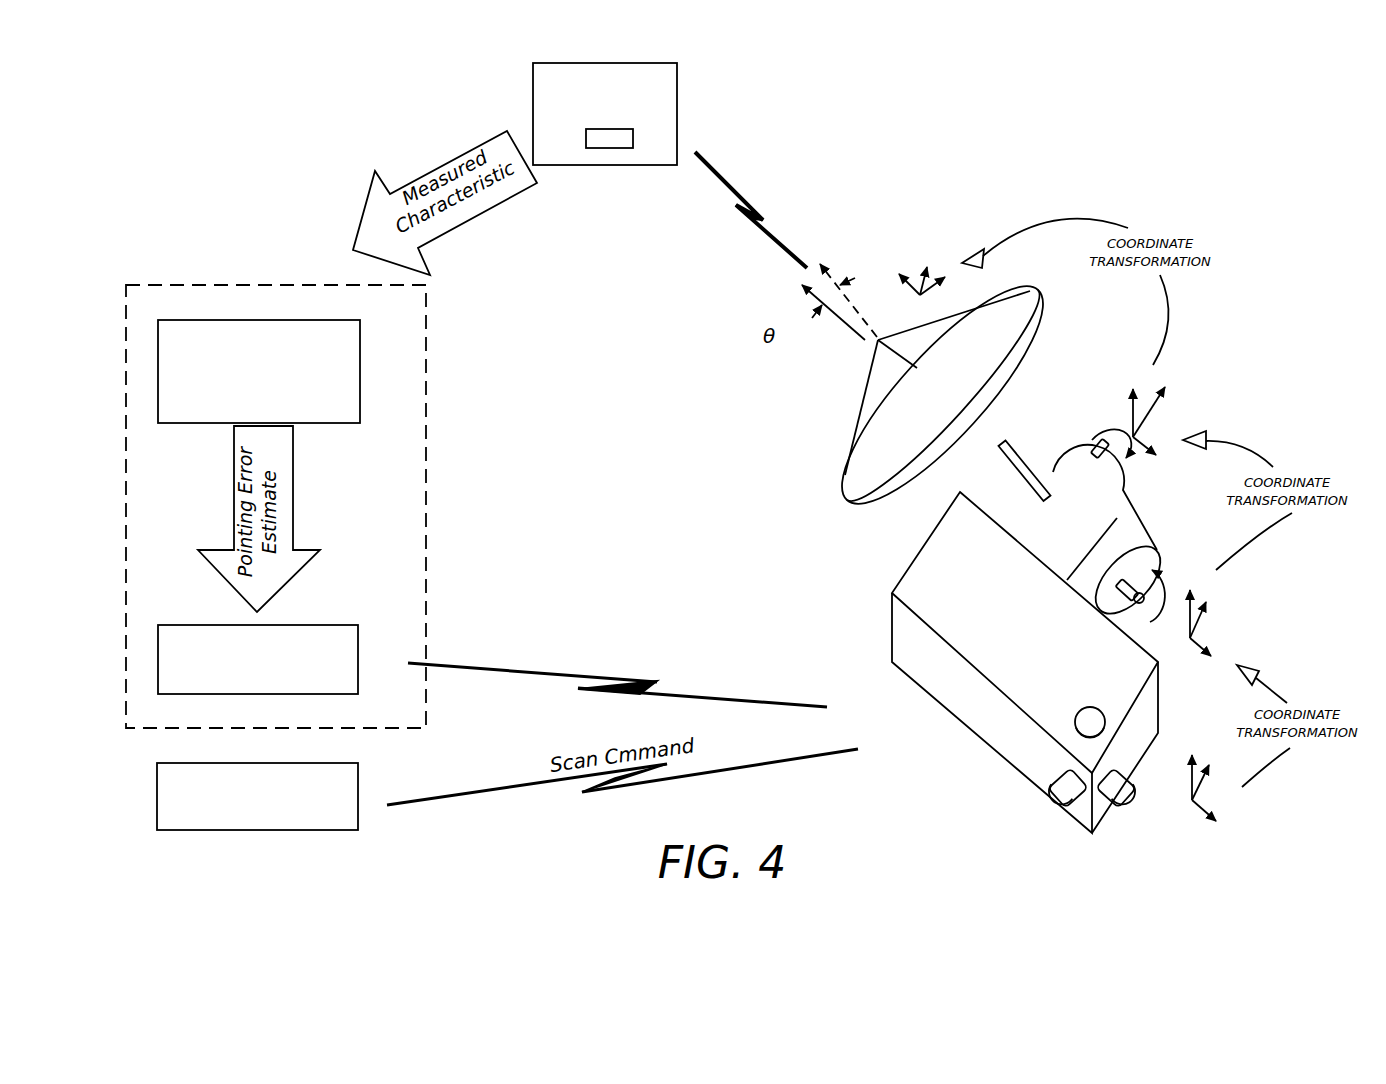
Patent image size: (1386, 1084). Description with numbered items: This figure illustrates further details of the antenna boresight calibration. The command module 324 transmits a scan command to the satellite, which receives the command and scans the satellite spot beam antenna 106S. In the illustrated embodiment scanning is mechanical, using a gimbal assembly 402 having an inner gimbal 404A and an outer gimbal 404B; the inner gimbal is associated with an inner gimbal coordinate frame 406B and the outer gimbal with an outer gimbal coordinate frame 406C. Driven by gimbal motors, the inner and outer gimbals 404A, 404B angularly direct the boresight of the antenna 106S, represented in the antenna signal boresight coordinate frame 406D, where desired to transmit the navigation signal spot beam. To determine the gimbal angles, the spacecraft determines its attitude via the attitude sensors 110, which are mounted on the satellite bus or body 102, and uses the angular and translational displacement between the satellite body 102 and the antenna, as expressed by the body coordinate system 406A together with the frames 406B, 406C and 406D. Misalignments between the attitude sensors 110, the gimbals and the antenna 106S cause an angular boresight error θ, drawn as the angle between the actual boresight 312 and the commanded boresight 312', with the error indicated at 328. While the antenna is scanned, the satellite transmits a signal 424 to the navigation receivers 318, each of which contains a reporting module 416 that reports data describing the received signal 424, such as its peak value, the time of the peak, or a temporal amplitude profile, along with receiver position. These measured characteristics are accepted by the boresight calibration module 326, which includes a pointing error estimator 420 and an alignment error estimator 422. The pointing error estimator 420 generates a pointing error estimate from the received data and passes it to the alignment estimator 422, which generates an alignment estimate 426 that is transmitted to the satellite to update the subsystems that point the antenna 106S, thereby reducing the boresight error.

The navigation receivers 318 is at (677, 112).
The reporting module 416 is at (617, 138).
The signal 424 is at (737, 208).
The boresight calibration module 326 is at (426, 515).
The pointing error estimator 420 is at (360, 396).
The alignment error estimator 422 is at (358, 660).
The command module 324 is at (358, 798).
The alignment estimate signal 426 is at (690, 692).
The satellite body 102 is at (920, 675).
The satellite spot beam antenna 106S is at (883, 498).
The actual antenna boresight vector 312 is at (831, 341).
The estimated antenna boresight vector 312' is at (855, 278).
The pointing error angle indicator 328 is at (807, 326).
The antenna signal boresight coordinate frame 406D is at (943, 268).
The outer gimbal coordinate frame 406C is at (1157, 432).
The inner gimbal coordinate frame 406B is at (1207, 632).
The satellite body coordinate system 406A is at (1213, 797).
The gimbal assembly 402 is at (1070, 512).
The outer gimbal 404B is at (1067, 470).
The inner gimbal 404A is at (1150, 575).
The attitude sensors 110 is at (1100, 728).